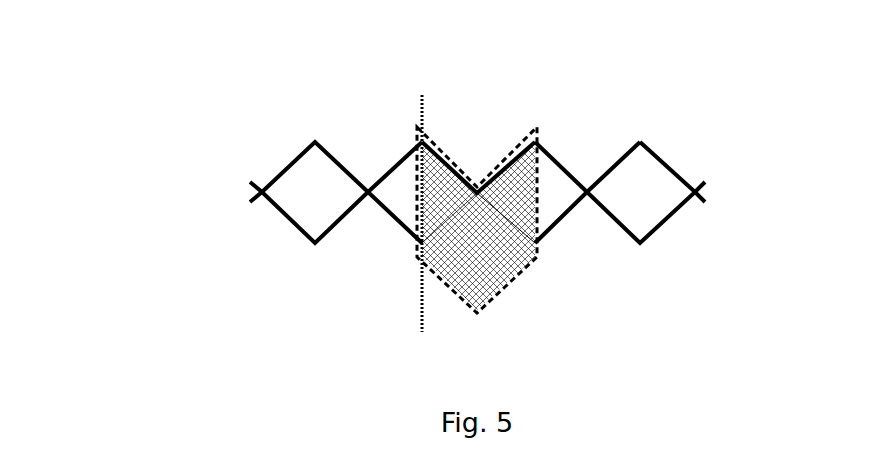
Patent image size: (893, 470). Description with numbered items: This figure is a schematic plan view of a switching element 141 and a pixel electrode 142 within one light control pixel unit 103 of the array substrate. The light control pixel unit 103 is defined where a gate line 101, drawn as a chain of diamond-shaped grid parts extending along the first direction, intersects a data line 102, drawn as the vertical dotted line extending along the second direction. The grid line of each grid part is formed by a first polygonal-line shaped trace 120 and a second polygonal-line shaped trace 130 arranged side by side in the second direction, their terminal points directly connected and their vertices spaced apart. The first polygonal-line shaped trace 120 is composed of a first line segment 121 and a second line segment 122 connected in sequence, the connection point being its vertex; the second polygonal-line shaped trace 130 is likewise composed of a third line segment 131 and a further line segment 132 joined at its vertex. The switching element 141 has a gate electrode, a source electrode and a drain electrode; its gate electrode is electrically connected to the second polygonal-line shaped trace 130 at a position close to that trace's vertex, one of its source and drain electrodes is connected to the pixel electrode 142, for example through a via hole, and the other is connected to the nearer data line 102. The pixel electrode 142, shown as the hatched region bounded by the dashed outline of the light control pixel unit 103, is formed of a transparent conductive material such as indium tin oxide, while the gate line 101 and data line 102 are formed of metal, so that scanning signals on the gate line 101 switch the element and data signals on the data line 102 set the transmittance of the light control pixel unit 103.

The gate line 101 is at (290, 163).
The data line 102 is at (423, 112).
The light control pixel unit 103 is at (539, 207).
The first polygonal-line shaped trace 120 is at (620, 147).
The first line segment 121 is at (610, 275).
The second line segment 122 is at (667, 275).
The second polygonal-line shaped trace 130 is at (620, 267).
The third line segment 131 is at (620, 357).
The second lower branch 132 is at (650, 357).
The switching element 141 is at (459, 172).
The pixel electrode 142 is at (500, 253).